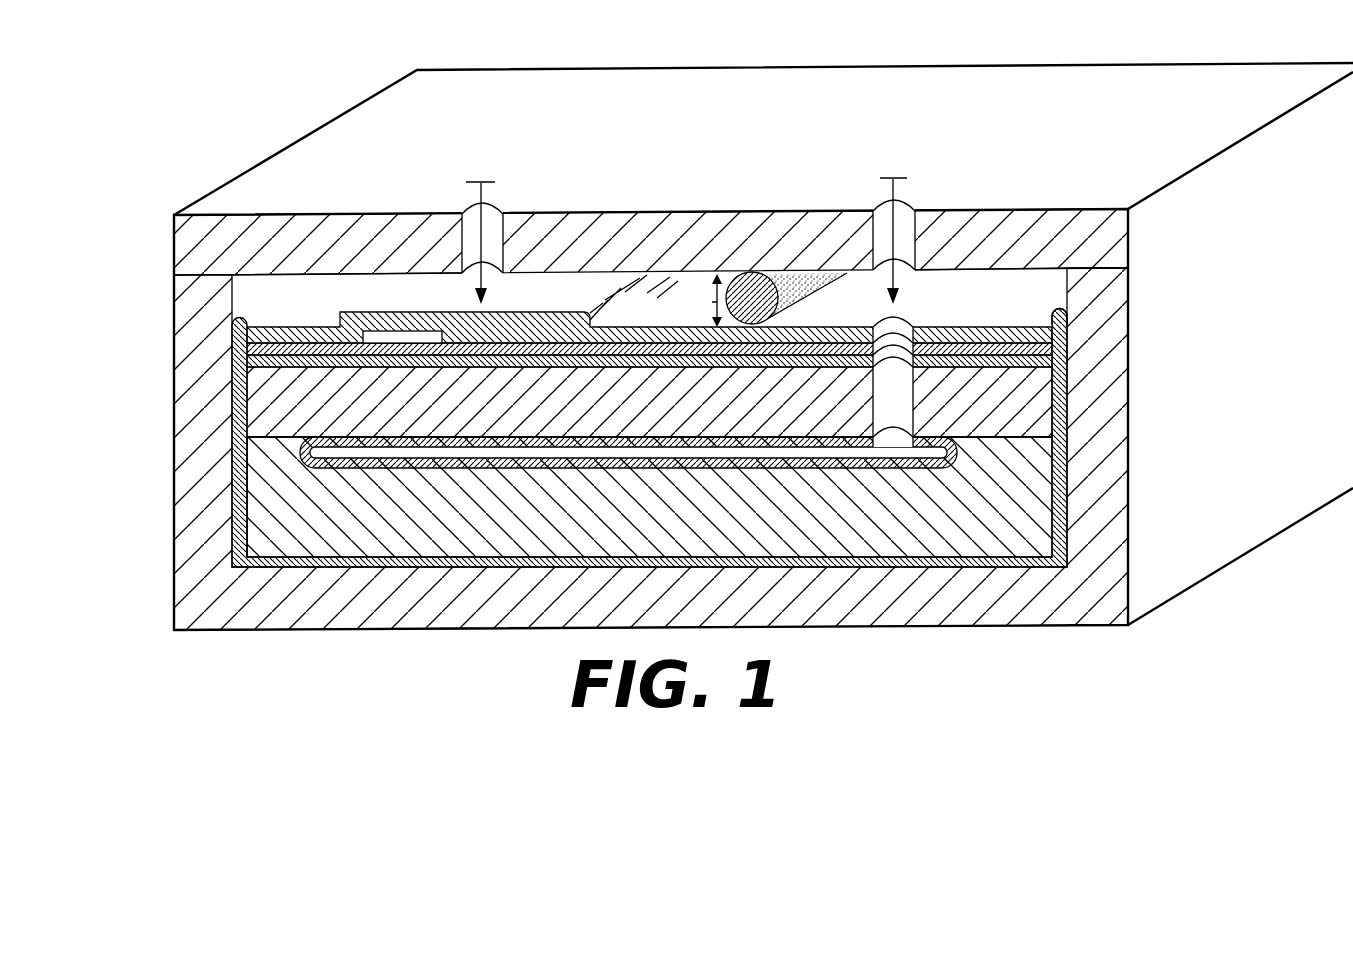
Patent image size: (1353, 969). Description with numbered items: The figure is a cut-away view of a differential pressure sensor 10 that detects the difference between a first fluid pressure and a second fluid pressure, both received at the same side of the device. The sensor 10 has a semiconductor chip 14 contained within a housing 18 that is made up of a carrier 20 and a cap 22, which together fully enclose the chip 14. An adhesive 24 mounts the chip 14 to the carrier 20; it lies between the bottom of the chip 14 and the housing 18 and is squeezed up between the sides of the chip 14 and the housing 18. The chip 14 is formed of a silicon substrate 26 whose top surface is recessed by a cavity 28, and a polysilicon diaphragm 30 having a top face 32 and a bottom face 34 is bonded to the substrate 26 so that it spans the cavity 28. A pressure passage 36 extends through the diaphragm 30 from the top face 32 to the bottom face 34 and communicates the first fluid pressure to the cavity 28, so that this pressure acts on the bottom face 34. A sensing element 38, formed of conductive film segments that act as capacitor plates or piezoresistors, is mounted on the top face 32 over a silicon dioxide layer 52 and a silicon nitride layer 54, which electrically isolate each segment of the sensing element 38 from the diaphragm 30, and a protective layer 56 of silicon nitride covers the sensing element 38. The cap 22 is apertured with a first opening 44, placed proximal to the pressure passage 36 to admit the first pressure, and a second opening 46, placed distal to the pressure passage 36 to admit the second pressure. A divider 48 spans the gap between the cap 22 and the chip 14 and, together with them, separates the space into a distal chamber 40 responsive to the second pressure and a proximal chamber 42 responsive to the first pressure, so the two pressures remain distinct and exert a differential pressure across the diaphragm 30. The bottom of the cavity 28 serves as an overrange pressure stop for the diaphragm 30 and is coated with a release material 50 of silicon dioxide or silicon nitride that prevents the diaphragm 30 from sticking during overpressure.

The differential pressure sensor 10 is at (790, 44).
The semiconductor chip 14 is at (232, 415).
The housing 18 is at (173, 440).
The carrier 20 is at (1117, 282).
The cap 22 is at (1113, 208).
The adhesive 24 is at (1057, 567).
The substrate 26 is at (1023, 507).
The cavity 28 is at (950, 455).
The diaphragm 30 is at (1038, 397).
The top face 32 is at (330, 376).
The bottom face 34 is at (250, 465).
The pressure passage 36 is at (890, 355).
The sensing element 38 is at (405, 340).
The chamber 40 is at (269, 302).
The chamber 42 is at (993, 304).
The first opening 44 is at (883, 217).
The second opening 46 is at (470, 222).
The divider 48 is at (752, 298).
The release material 50 is at (300, 466).
The silicon dioxide layer 52 is at (1042, 352).
The silicon nitride layer 54 is at (1063, 321).
The protective layer 56 is at (1022, 327).